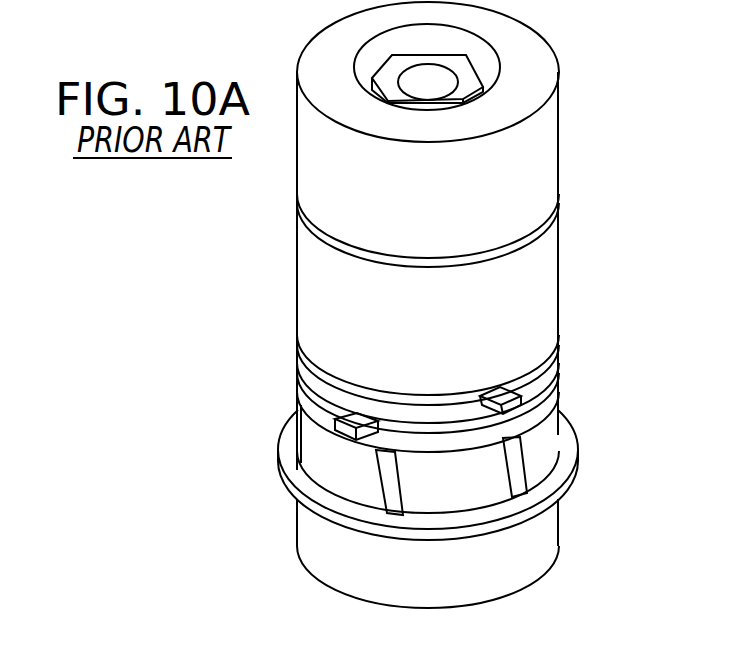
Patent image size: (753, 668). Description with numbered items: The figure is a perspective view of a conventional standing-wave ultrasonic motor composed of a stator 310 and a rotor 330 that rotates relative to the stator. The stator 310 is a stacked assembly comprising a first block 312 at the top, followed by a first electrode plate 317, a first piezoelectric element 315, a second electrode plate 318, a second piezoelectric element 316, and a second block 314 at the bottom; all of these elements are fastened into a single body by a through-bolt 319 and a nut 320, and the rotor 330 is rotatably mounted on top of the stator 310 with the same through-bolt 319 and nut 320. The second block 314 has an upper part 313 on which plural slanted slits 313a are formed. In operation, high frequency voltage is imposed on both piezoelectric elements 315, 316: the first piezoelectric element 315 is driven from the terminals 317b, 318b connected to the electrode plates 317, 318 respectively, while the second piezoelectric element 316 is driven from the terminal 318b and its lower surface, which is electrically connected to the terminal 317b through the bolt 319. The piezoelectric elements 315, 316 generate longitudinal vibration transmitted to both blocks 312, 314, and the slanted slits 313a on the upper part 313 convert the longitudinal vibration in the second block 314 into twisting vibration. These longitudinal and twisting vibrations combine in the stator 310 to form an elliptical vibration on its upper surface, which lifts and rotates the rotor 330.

The stator 310 is at (640, 532).
The first block 312 is at (543, 282).
The upper part of second block 313 is at (464, 457).
The slanted slits 313a is at (510, 455).
The second block 314 is at (548, 518).
The first piezoelectric element 315 is at (557, 367).
The second piezoelectric element 316 is at (553, 393).
The first electrode plate 317 is at (559, 346).
The terminal 317b is at (489, 391).
The second electrode plate 318 is at (558, 380).
The terminal 318b is at (350, 418).
The through-bolt 319 is at (443, 79).
The nut 320 is at (413, 101).
The rotor 330 is at (542, 146).